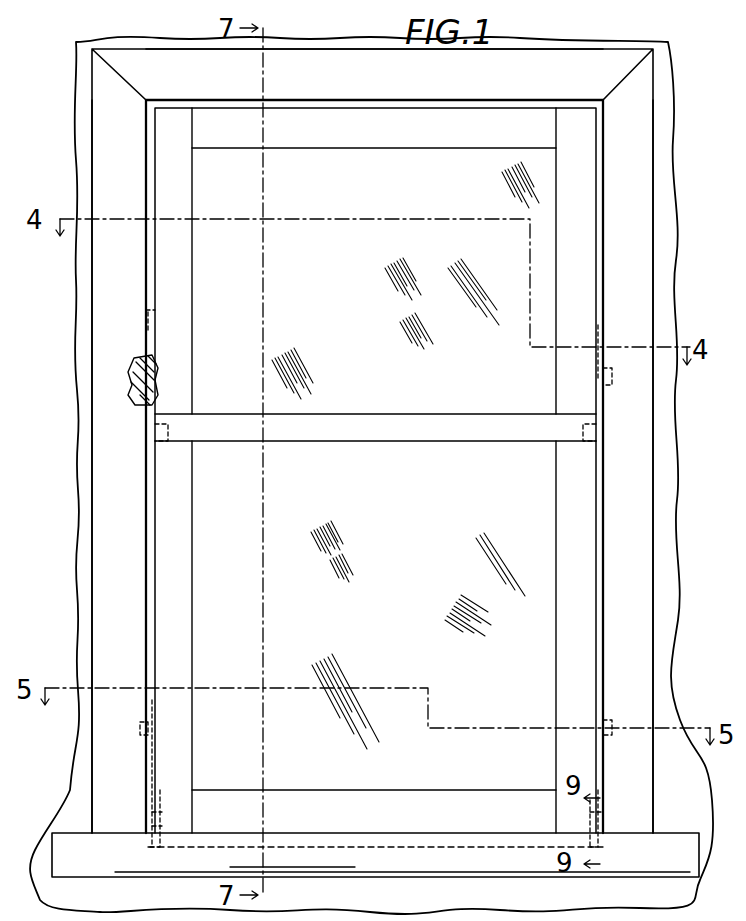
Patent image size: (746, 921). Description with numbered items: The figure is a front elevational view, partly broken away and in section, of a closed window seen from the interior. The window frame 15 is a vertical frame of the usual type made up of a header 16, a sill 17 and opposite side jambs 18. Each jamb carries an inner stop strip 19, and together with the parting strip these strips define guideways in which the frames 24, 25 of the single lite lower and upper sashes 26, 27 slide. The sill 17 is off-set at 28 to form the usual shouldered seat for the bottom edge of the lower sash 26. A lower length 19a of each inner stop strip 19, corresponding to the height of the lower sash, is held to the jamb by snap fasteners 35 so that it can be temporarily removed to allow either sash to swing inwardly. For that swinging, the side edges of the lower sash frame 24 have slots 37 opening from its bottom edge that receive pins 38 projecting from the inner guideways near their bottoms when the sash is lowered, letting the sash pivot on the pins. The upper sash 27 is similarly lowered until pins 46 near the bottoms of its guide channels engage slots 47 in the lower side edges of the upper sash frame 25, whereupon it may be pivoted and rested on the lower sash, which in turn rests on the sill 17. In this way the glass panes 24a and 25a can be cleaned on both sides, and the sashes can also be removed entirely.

The window frame 15 is at (78, 381).
The header 16 is at (524, 58).
The sill 17 is at (152, 862).
The side jamb 18 is at (100, 334).
The inner stop strip 19 is at (139, 284).
The lower portion of inner stop strip 19a is at (150, 544).
The lower sash frame 24 is at (436, 670).
The glass pane of lower sash 24a is at (540, 658).
The upper sash frame 25 is at (438, 262).
The glass pane of upper sash 25a is at (543, 318).
The lower sash 26 is at (323, 820).
The upper sash 27 is at (577, 188).
The off-set 28 is at (432, 850).
The snap fastener 35 is at (140, 378).
The slot 37 is at (160, 826).
The pin 38 is at (160, 815).
The pin 46 is at (160, 790).
The slot 47 is at (160, 440).